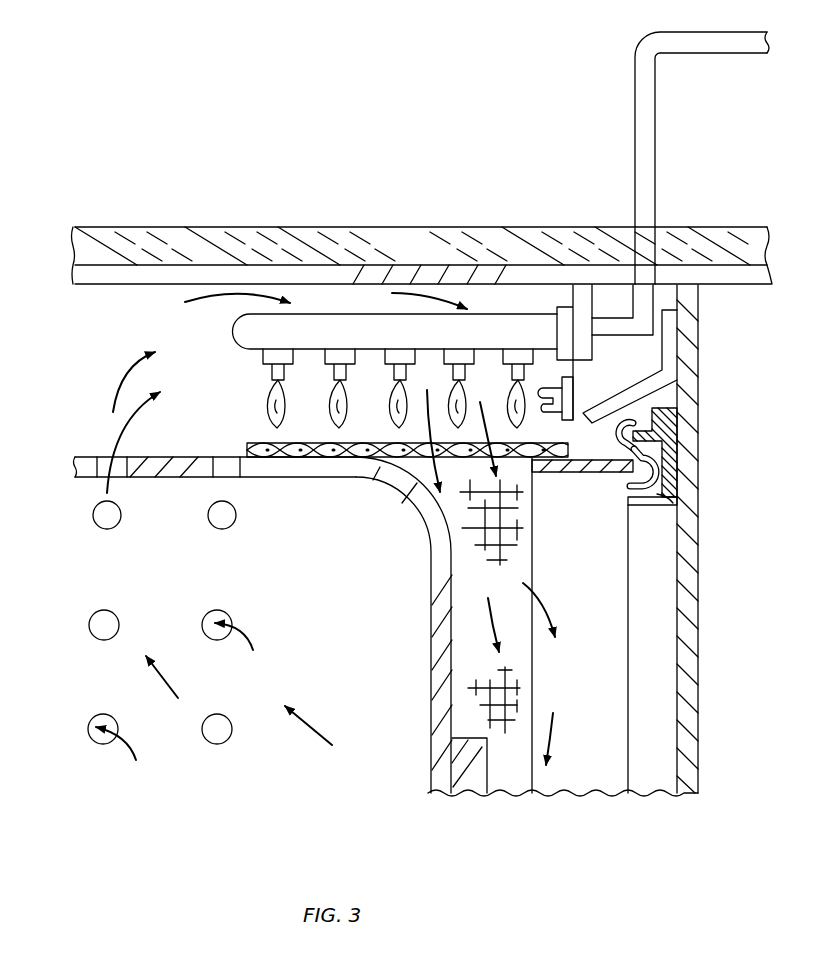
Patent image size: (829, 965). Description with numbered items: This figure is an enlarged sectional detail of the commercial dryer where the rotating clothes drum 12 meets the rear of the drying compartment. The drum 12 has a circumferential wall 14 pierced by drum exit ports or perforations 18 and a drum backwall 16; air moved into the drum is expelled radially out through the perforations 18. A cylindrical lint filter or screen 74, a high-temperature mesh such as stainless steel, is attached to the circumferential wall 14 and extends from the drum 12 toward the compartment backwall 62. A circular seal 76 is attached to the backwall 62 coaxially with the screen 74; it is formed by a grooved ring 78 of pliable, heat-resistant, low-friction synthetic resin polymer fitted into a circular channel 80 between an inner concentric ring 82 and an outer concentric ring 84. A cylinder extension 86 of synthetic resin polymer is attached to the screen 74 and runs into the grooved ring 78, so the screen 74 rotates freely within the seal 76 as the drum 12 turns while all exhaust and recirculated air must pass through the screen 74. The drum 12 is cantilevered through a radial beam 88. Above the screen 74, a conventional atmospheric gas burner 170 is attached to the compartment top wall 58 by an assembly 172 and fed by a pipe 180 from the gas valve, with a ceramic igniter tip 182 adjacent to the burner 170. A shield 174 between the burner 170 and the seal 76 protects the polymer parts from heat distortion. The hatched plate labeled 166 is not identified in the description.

The rotating clothes drum 12 is at (84, 450).
The circumferential wall 14 is at (192, 457).
The drum backwall 16 is at (433, 546).
The drum exit ports or perforations 18 is at (221, 515).
The top wall 58 is at (348, 272).
The backwall 62 is at (688, 673).
The cylindrical lint filter or screen 74 is at (262, 443).
The circular seal 76 is at (646, 512).
The grooved ring 78 is at (612, 436).
The circular channel 80 is at (628, 487).
The inner concentric ring 82 is at (662, 500).
The outer concentric ring 84 is at (645, 418).
The cylinder extension 86 is at (548, 476).
The radial beam 88 is at (478, 775).
The insulated top plate 166 is at (103, 235).
The atmospheric gas burner 170 is at (230, 324).
The assembly 172 is at (588, 293).
The shield 174 is at (668, 345).
The pipe 180 is at (635, 102).
The ceramic igniter tip 182 is at (567, 402).